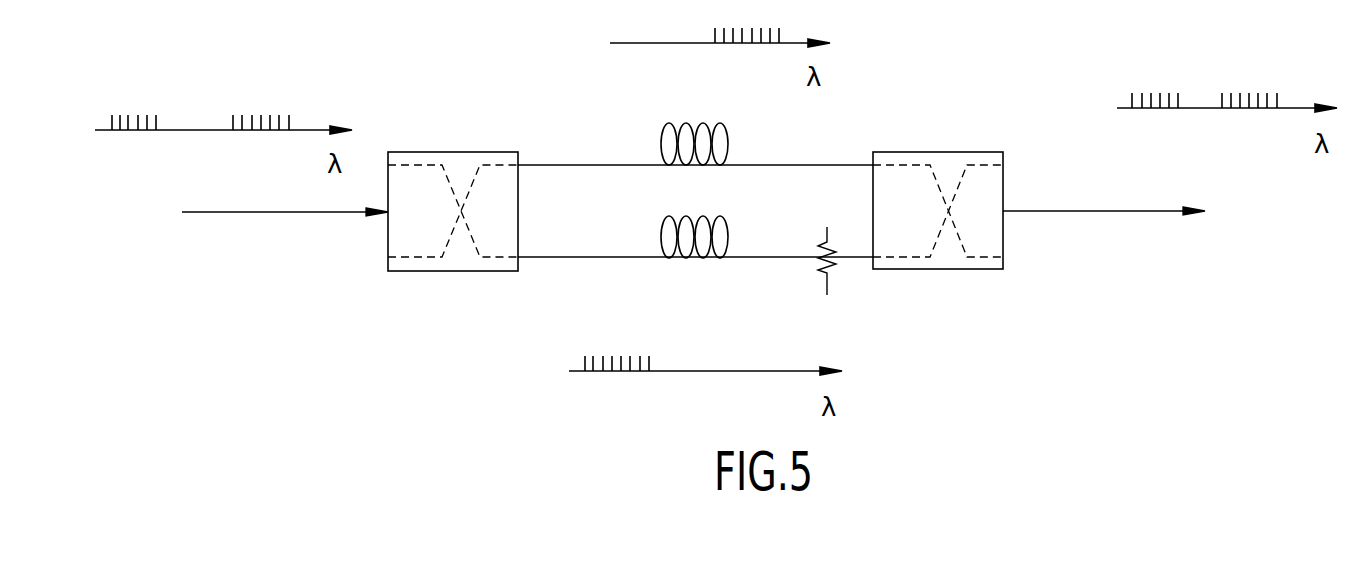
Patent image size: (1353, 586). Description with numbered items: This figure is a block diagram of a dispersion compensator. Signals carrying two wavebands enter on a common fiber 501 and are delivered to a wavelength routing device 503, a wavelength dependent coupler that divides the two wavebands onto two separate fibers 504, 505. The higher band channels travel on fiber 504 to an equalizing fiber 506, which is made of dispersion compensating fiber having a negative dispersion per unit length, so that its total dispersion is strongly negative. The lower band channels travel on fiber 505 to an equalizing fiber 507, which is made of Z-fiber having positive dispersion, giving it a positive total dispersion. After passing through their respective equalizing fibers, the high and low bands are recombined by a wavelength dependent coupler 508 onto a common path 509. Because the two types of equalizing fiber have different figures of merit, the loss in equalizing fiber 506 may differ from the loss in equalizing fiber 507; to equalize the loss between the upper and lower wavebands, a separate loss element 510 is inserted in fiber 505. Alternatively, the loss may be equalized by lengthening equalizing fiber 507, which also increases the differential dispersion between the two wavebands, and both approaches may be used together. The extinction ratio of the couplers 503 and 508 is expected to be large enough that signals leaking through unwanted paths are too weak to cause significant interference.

The common fiber 501 is at (245, 212).
The wavelength routing device 503 is at (455, 152).
The fiber 504 is at (588, 164).
The fiber 505 is at (568, 257).
The equalizing fiber 506 is at (719, 123).
The equalizing fiber 507 is at (728, 220).
The wavelength dependent coupler 508 is at (973, 152).
The common path 509 is at (1100, 212).
The loss element 510 is at (830, 275).